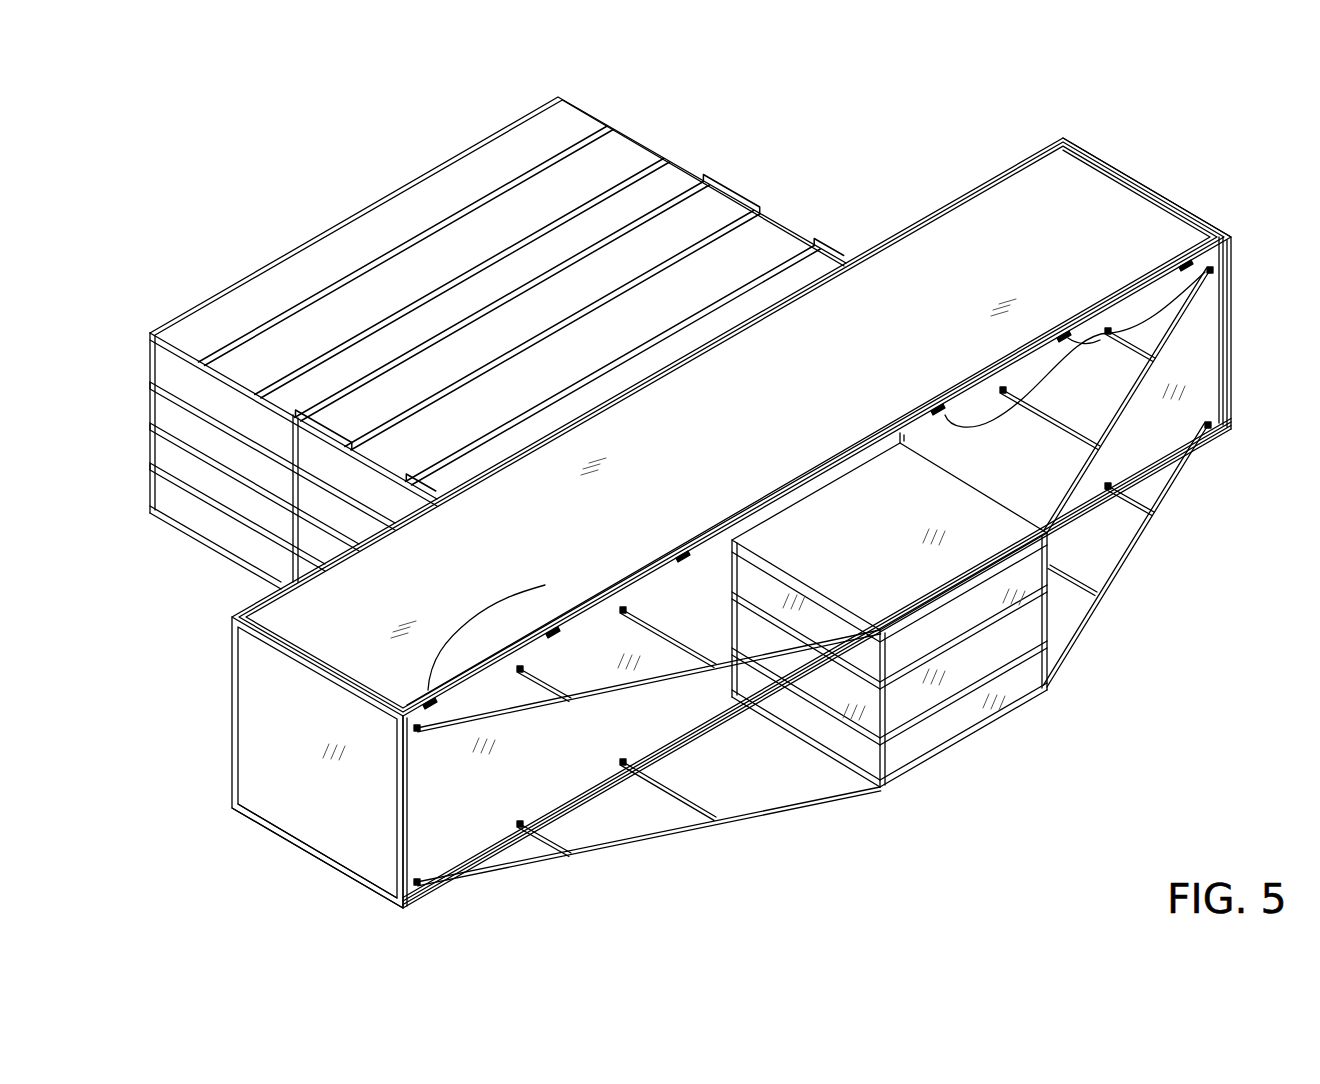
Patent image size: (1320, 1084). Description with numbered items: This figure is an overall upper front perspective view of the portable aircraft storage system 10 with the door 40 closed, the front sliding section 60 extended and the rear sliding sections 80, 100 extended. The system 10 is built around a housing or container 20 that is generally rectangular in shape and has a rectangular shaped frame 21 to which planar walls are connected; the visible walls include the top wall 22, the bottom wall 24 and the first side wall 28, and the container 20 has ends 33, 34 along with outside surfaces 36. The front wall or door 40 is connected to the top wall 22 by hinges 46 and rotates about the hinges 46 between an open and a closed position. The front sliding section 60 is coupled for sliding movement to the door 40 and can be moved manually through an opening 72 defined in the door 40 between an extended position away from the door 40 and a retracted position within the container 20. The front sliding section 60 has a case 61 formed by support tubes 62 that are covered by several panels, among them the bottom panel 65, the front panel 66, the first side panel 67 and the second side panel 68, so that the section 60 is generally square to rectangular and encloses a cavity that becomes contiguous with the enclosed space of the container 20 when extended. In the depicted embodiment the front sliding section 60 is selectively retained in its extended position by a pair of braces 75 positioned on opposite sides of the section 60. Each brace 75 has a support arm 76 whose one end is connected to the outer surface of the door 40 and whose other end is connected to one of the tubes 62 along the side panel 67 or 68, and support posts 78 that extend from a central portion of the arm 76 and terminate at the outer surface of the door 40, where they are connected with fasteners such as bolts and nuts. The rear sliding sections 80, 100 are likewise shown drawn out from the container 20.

The portable aircraft storage system 10 is at (184, 134).
The rear sliding section 100 is at (498, 327).
The rear sliding section 80 is at (742, 175).
The container 20 is at (723, 516).
The top wall 22 is at (990, 255).
The end 34 is at (1135, 170).
The hinges 46 is at (552, 627).
The braces 75 is at (1150, 378).
The outside surfaces 36 is at (1185, 422).
The support posts 78 is at (1130, 505).
The support arm 76 is at (1100, 588).
The second side panel 68 is at (1050, 618).
The case 61 is at (1050, 645).
The support tubes 62 is at (1015, 665).
The front panel 66 is at (1010, 693).
The front sliding section 60 is at (976, 647).
The bottom panel 65 is at (903, 777).
The first side panel 67 is at (838, 737).
The opening 72 is at (707, 673).
The bottom wall 24 is at (570, 812).
The door 40 is at (458, 788).
The first side wall 28 is at (343, 810).
The end 33 is at (272, 840).
The frame 21 is at (277, 774).